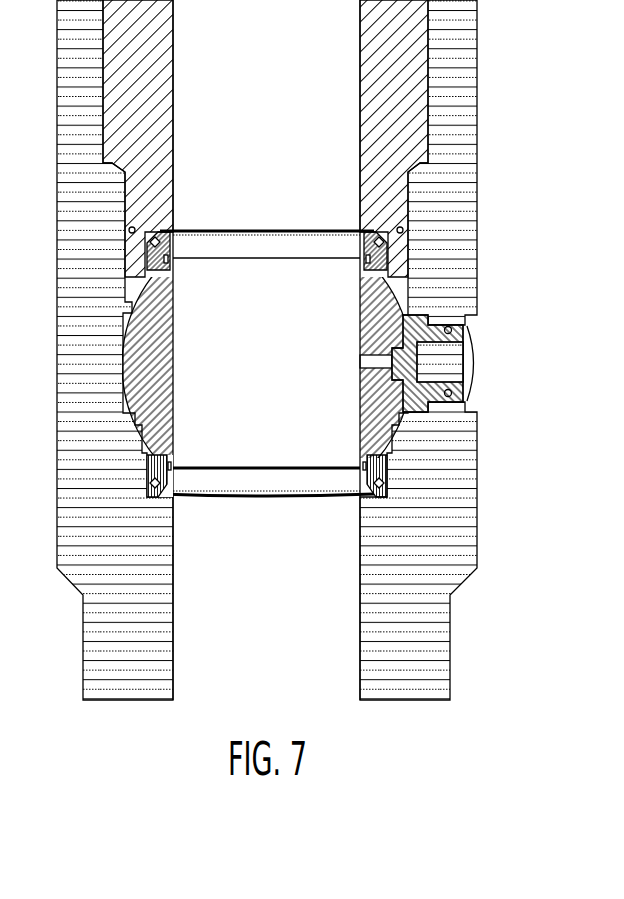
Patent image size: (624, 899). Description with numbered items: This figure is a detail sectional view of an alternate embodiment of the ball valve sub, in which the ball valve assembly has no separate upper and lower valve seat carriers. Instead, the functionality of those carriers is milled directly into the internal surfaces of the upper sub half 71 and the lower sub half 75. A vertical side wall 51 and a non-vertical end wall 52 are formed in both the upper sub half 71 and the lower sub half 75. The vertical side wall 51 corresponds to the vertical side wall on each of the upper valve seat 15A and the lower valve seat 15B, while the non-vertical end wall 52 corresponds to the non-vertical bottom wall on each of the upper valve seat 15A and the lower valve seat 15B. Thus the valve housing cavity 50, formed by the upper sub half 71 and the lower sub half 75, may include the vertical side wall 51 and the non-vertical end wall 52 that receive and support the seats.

The upper sub half 71 is at (152, 84).
The lower sub half 75 is at (98, 291).
The upper valve seat 15A is at (179, 244).
The lower valve seat 15B is at (356, 482).
The valve housing cavity 50 is at (146, 494).
The vertical side wall 51 is at (390, 261).
The non-vertical end wall 52 is at (378, 236).